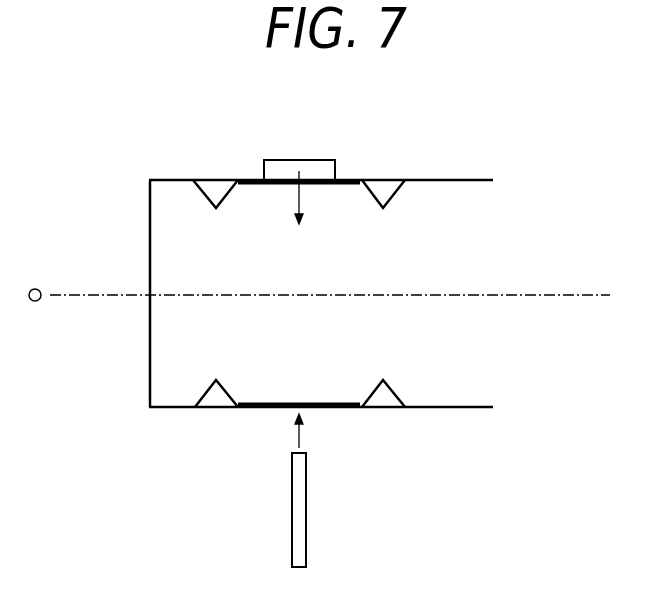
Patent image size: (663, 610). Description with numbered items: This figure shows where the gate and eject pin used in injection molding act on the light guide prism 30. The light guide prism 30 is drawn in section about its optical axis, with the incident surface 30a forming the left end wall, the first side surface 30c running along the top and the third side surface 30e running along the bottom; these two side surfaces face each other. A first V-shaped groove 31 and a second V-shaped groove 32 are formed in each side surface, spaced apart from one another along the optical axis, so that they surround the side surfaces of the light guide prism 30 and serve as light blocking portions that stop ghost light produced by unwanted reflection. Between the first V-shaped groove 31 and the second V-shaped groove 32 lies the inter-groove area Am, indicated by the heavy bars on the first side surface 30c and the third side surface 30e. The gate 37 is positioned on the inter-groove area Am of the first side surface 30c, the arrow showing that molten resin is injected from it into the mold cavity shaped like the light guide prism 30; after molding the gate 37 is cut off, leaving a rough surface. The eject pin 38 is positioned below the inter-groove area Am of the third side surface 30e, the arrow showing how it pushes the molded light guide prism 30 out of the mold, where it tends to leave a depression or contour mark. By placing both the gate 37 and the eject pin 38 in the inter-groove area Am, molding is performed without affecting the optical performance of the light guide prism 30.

The light guide prism 30 is at (309, 286).
The incident surface 30a is at (149, 240).
The first side surface 30c is at (463, 180).
The third side surface 30e is at (463, 408).
The first V-shaped groove 31 is at (218, 188).
The second V-shaped groove 32 is at (383, 190).
The gate 37 is at (315, 166).
The eject pin 38 is at (298, 540).
The inter-groove area Am is at (325, 184).